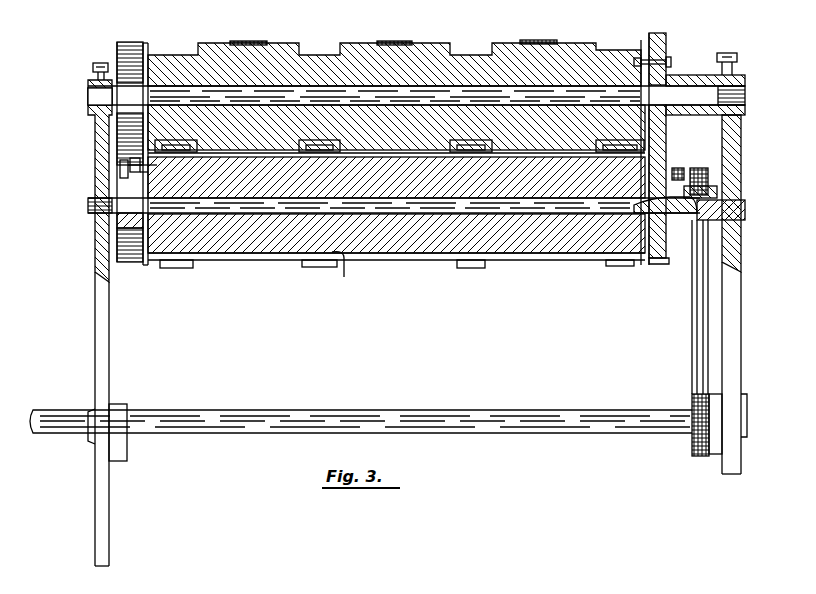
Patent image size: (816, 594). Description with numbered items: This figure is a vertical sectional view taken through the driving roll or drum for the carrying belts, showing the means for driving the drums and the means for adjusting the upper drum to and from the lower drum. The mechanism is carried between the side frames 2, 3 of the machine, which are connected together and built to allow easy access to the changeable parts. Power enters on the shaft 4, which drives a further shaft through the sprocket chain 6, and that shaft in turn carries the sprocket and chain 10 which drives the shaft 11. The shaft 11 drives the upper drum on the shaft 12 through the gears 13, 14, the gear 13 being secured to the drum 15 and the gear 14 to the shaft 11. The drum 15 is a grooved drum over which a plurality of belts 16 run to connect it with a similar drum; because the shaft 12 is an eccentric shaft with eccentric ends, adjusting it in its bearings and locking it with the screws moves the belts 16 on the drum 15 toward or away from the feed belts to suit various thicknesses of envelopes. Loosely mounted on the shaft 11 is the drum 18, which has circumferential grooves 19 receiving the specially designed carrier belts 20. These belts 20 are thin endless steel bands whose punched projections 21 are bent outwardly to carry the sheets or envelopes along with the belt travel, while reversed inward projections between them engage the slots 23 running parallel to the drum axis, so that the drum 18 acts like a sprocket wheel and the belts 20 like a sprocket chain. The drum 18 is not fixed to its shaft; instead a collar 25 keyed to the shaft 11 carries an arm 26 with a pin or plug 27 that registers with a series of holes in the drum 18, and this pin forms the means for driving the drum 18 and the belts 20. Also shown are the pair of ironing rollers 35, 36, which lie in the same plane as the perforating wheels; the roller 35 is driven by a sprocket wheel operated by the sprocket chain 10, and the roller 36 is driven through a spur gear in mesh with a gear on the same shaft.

The side frame 2 is at (729, 323).
The side frame 3 is at (98, 318).
The shaft 4 is at (369, 419).
The sprocket chain 6 is at (701, 362).
The sprocket and chain 10 is at (681, 168).
The shaft 11 is at (567, 208).
The eccentric shaft 12 is at (460, 95).
The gear 13 is at (667, 43).
The gear 14 is at (659, 264).
The grooved drum 15 is at (579, 44).
The belts 16 is at (259, 42).
The drum 18 is at (409, 243).
The circumferential grooves 19 is at (342, 291).
The belts 20 is at (307, 267).
The projections 21 is at (180, 268).
The slots 23 is at (535, 256).
The collar 25 is at (133, 230).
The arm 26 is at (118, 135).
The pin or plug 27 is at (118, 165).
The ironing roller 35 is at (125, 263).
The ironing roller 36 is at (115, 55).